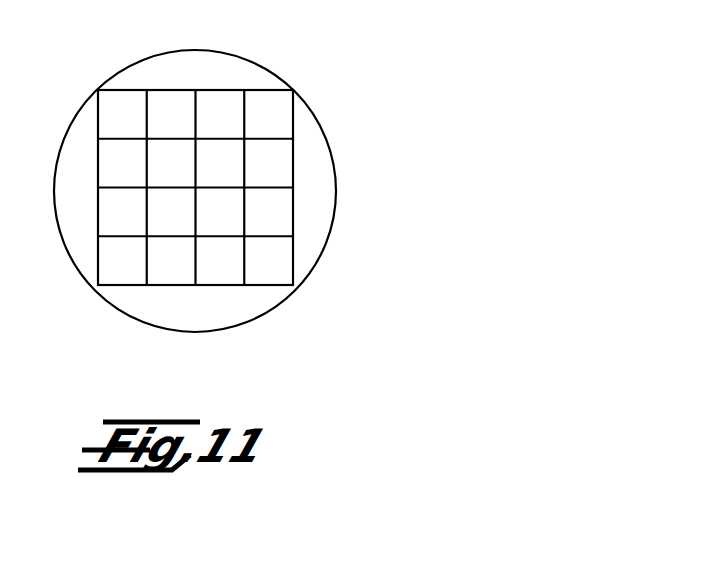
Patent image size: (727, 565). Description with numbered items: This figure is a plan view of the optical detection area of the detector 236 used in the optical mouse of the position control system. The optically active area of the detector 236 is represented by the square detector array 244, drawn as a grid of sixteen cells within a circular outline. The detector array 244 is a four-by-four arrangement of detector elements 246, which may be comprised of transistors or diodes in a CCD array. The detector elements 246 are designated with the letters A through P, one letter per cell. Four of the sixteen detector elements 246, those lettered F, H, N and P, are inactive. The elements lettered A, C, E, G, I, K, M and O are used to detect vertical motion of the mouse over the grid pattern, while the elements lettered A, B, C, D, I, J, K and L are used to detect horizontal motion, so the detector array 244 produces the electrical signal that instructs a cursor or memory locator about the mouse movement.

The detector 236 is at (247, 60).
The detector array 244 is at (295, 147).
The detector elements 246 is at (228, 278).